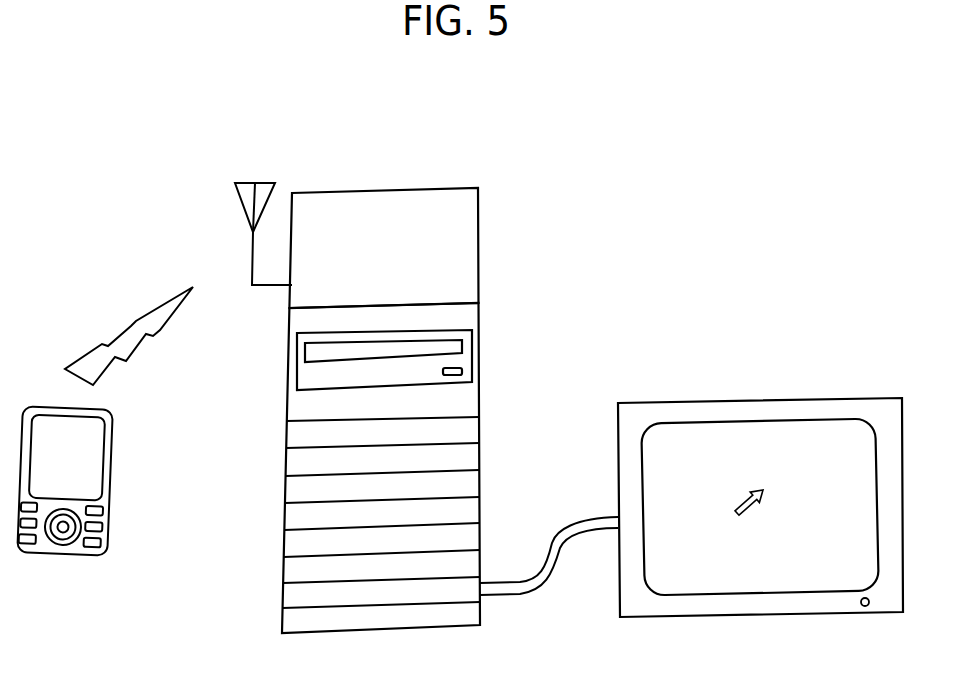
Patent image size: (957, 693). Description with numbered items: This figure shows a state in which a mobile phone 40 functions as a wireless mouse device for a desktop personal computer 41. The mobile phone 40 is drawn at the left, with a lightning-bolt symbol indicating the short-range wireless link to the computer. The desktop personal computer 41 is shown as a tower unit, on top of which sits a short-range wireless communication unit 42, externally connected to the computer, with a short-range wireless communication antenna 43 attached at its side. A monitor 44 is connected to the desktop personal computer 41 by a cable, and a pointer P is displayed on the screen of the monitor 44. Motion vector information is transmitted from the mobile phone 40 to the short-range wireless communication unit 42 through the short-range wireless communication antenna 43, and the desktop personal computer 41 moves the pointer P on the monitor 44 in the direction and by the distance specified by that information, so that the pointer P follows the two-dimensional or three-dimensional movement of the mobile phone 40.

The mobile phone 40 is at (57, 580).
The desktop personal computer 41 is at (468, 405).
The short-range wireless communication unit 42 is at (480, 278).
The short-range wireless communication antenna 43 is at (265, 205).
The monitor 44 is at (728, 405).
The pointer P is at (746, 540).